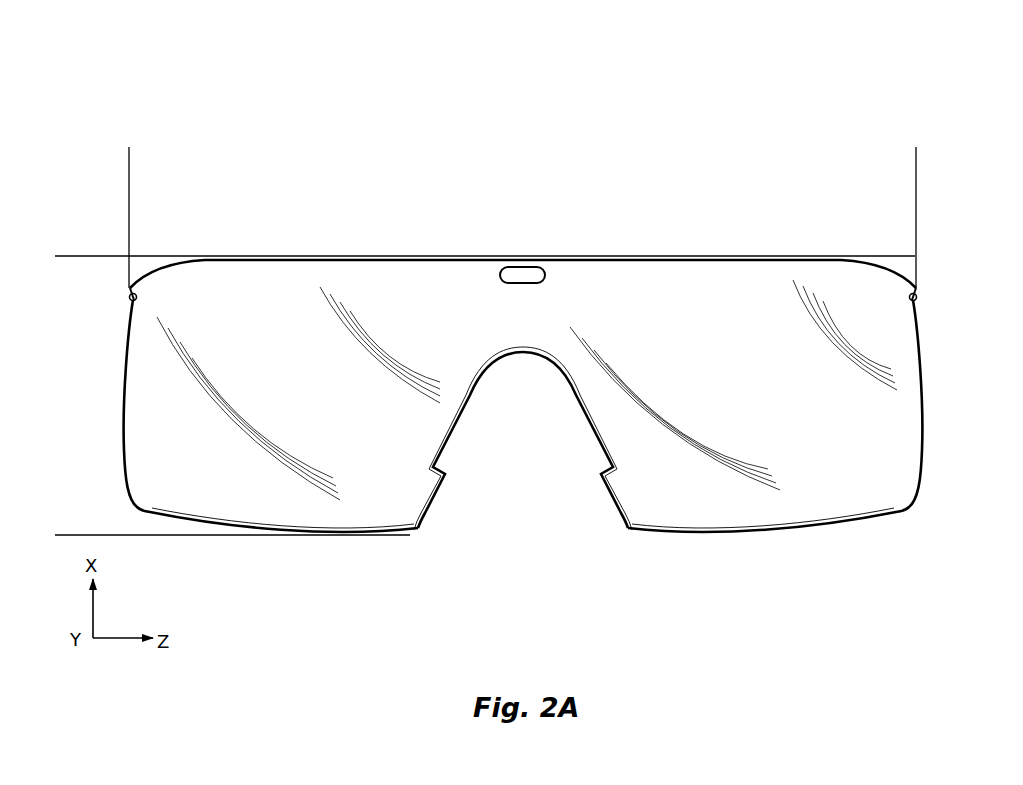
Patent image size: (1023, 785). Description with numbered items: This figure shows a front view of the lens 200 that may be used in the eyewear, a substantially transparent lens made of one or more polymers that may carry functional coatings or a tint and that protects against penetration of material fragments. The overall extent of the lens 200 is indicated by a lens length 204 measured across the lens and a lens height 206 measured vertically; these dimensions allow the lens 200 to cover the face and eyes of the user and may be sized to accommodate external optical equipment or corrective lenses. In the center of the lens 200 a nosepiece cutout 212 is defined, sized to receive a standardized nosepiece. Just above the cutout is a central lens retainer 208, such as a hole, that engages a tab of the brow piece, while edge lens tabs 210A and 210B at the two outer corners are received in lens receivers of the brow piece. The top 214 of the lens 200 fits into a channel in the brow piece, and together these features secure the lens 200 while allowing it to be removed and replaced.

The lens 200 is at (137, 105).
The lens length 204 is at (915, 160).
The lens height 206 is at (72, 257).
The central lens retainer 208 is at (503, 271).
The edge lens tab 210A is at (916, 288).
The edge lens tab 210B is at (130, 288).
The nosepiece cutout 212 is at (567, 383).
The top of the lens 214 is at (745, 257).